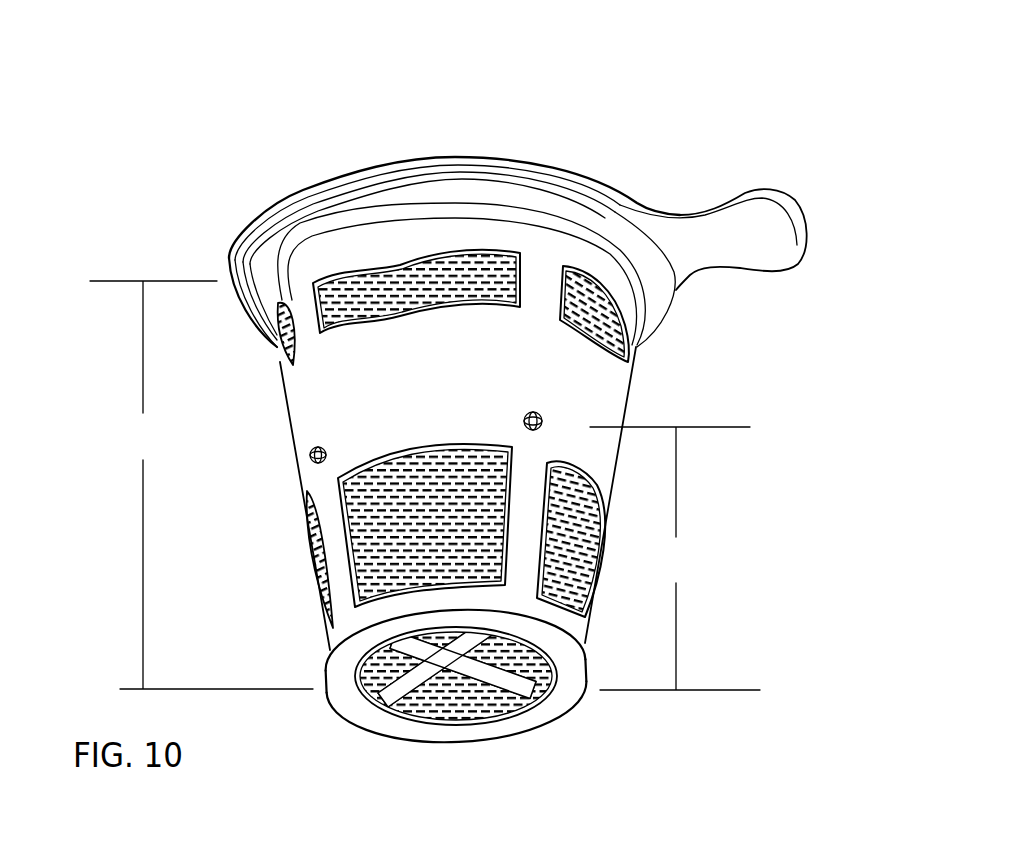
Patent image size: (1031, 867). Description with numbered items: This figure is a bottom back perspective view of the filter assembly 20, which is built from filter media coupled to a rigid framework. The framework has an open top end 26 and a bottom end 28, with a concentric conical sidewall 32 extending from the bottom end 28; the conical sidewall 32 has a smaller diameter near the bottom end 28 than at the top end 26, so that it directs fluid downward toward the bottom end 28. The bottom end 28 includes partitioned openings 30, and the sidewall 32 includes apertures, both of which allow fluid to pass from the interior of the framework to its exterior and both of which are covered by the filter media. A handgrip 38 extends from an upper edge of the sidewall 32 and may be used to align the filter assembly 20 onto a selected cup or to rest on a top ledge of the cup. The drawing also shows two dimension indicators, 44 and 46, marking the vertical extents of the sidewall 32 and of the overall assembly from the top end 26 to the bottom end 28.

The filter assembly 20 is at (861, 350).
The open top end 26 is at (369, 156).
The bottom end 28 is at (538, 732).
The partitioned openings 30 is at (412, 705).
The conical sidewall 32 is at (627, 408).
The handgrip 38 is at (772, 228).
The sidewall height 44 is at (675, 558).
The overall height 46 is at (201, 485).